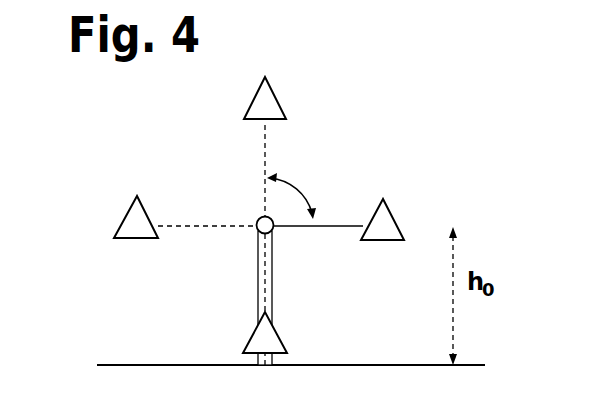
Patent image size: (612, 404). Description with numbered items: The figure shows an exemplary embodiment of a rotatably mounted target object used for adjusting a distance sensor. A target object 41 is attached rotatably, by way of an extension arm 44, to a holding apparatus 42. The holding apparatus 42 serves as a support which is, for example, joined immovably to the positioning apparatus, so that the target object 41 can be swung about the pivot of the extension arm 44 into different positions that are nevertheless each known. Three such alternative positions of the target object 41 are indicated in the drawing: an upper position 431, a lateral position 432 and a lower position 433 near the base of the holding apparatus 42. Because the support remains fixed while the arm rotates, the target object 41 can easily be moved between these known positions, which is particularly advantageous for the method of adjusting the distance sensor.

The target object 41 is at (389, 218).
The holding apparatus 42 is at (272, 273).
The extension arm 44 is at (335, 225).
The alternative position of target object 431 is at (277, 98).
The alternative position of target object 432 is at (125, 208).
The alternative position of target object 433 is at (252, 340).